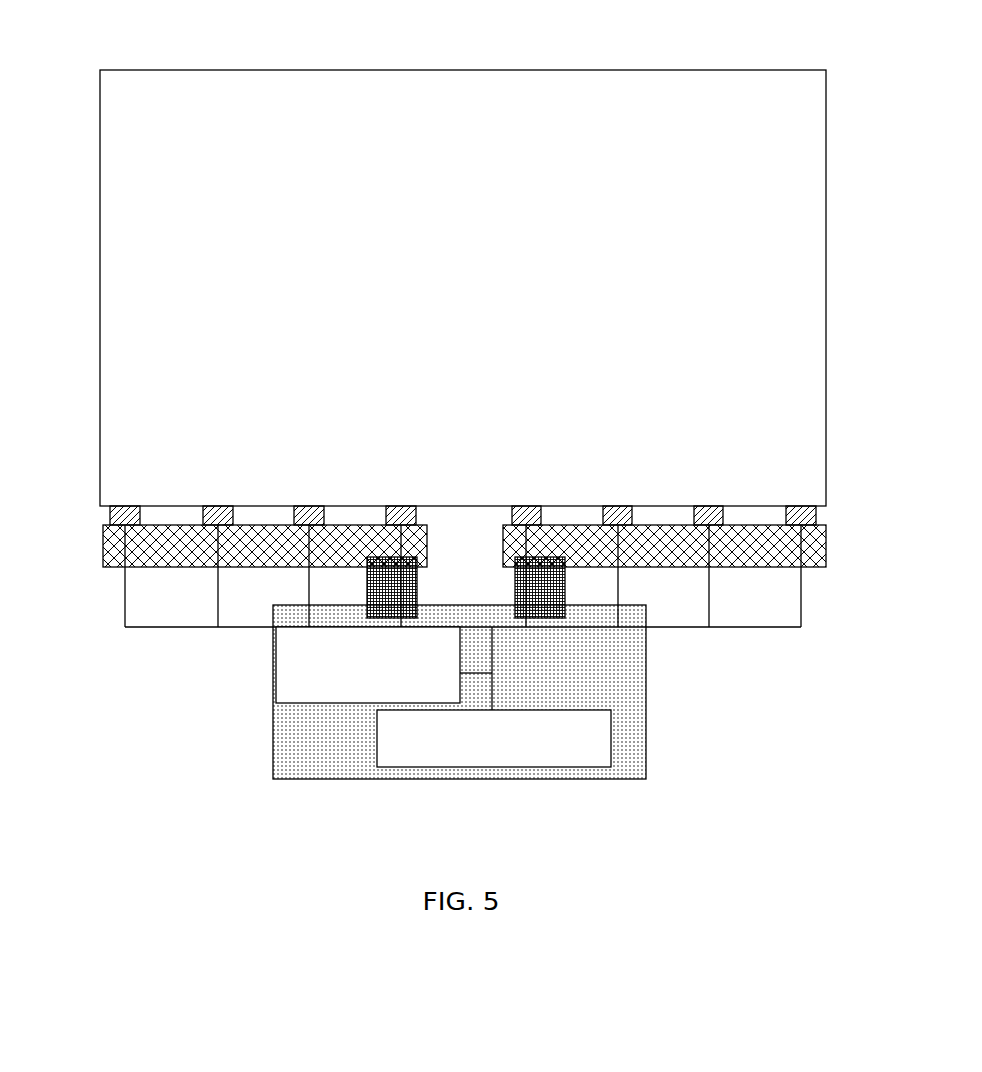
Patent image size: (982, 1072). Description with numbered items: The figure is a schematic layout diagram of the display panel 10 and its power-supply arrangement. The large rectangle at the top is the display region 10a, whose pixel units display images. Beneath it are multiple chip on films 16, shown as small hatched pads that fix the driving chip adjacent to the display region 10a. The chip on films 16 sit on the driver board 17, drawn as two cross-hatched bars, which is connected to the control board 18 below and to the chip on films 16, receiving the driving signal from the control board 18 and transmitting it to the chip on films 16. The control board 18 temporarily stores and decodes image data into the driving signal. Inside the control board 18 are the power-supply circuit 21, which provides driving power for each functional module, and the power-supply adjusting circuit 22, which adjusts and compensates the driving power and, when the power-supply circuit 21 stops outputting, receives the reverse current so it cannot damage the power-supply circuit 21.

The display panel 10 is at (490, 33).
The display region 10a is at (133, 183).
The chip on films 16 is at (103, 518).
The driver board 17 is at (826, 548).
The control board 18 is at (646, 737).
The power-supply circuit 21 is at (493, 767).
The power-supply adjusting circuit 22 is at (272, 675).